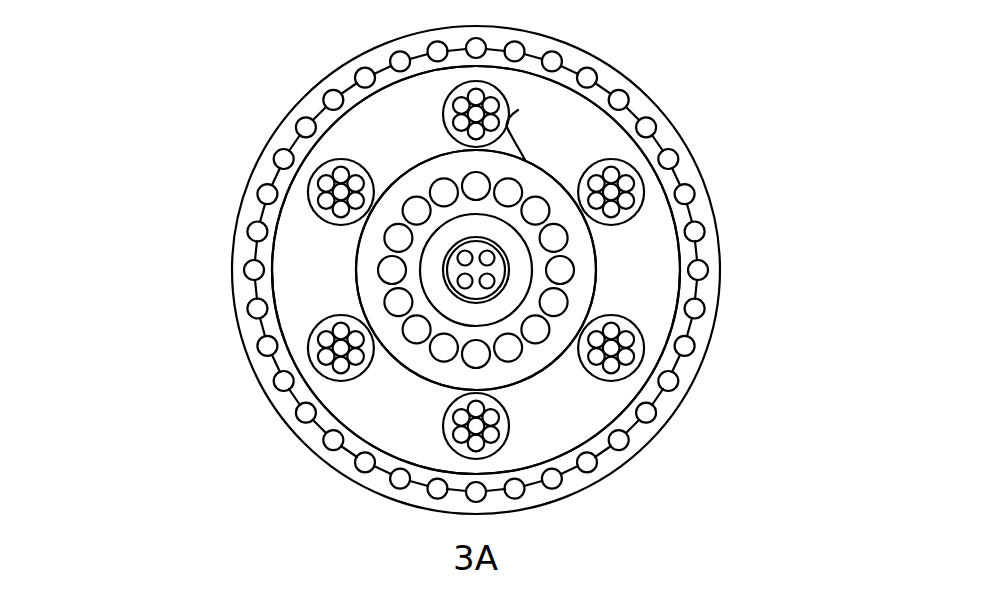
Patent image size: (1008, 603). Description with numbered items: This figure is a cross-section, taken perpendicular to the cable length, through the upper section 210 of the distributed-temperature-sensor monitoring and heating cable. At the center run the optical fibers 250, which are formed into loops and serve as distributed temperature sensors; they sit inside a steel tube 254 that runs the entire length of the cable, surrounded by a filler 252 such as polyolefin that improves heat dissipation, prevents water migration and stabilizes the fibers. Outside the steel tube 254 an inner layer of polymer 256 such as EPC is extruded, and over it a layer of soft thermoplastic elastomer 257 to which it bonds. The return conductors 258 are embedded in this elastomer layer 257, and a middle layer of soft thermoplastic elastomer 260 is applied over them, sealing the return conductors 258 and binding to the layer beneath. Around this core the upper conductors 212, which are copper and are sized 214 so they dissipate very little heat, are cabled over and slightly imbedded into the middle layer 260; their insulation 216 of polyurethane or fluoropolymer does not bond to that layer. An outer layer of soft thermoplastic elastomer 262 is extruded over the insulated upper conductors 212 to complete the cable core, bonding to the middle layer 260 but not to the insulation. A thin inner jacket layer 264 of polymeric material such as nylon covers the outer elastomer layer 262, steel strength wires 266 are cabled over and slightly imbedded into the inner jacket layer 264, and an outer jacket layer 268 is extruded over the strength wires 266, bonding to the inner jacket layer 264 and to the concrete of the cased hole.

The upper section 210 is at (183, 54).
The upper conductors 212 is at (387, 249).
The size of the upper conductors 214 is at (297, 162).
The insulation of the upper conductors 216 is at (329, 175).
The optical fiber 250 is at (462, 248).
The filler 252 is at (476, 241).
The steel tube 254 is at (485, 249).
The inner layer of polymer 256 is at (508, 300).
The layer of soft thermoplastic elastomer 257 is at (490, 327).
The return conductors 258 is at (477, 358).
The middle layer of soft thermoplastic elastomer 260 is at (458, 372).
The outer layer of soft thermoplastic elastomer 262 is at (302, 303).
The inner jacket layer 264 is at (632, 113).
The steel strength wires 266 is at (693, 230).
The outer jacket layer 268 is at (707, 328).